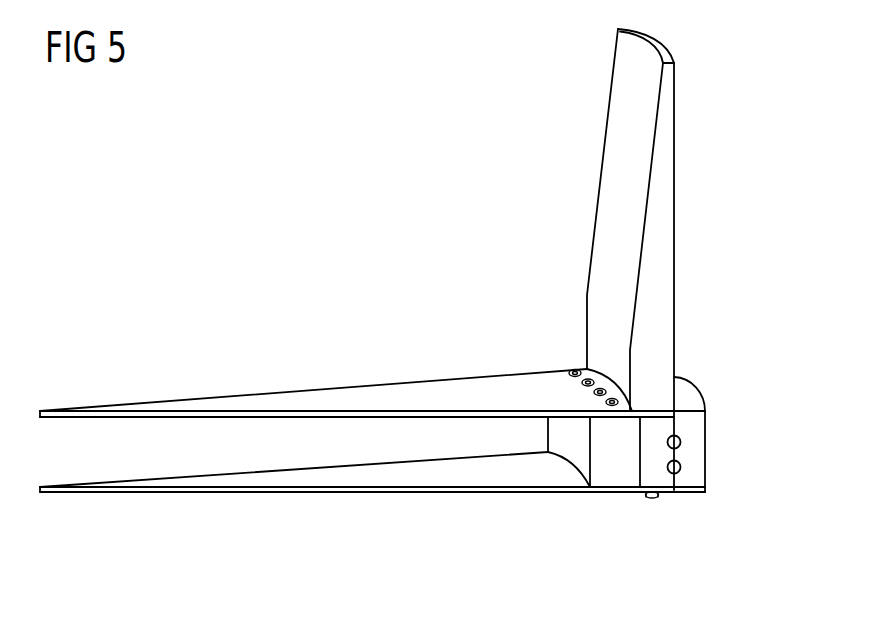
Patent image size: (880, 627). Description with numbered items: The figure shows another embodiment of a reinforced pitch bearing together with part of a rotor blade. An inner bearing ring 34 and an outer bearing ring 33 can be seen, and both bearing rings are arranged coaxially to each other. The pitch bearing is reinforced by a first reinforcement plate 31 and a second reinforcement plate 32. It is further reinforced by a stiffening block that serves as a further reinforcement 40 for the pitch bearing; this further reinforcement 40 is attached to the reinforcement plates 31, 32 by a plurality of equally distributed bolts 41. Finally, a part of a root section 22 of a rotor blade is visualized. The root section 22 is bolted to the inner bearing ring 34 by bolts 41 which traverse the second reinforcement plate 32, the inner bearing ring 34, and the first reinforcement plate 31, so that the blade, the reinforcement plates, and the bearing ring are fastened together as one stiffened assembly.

The root section 22 is at (665, 333).
The first reinforcement plate 31 is at (232, 405).
The second reinforcement plate 32 is at (210, 480).
The outer bearing ring 33 is at (700, 452).
The inner bearing ring 34 is at (653, 468).
The further reinforcement 40 is at (607, 472).
The bolts 41 is at (575, 369).